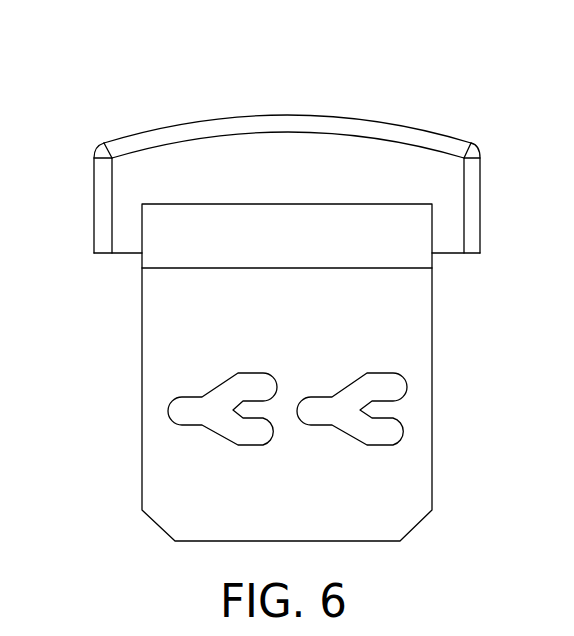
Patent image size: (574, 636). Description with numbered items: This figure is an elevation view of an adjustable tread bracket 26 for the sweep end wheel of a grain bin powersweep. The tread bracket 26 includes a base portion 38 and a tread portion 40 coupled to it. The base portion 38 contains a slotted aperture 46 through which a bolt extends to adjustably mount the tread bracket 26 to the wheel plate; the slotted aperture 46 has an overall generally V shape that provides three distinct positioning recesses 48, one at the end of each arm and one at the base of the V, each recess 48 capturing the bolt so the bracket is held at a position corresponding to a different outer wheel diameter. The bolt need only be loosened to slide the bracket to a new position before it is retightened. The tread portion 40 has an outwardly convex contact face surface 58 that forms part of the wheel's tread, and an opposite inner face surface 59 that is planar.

The adjustable tread bracket 26 is at (421, 70).
The base portion 38 is at (410, 305).
The tread portion 40 is at (123, 183).
The slotted aperture 46 is at (203, 365).
The positioning recess 48 is at (183, 408).
The contact face surface 58 is at (287, 112).
The inner face surface 59 is at (451, 255).